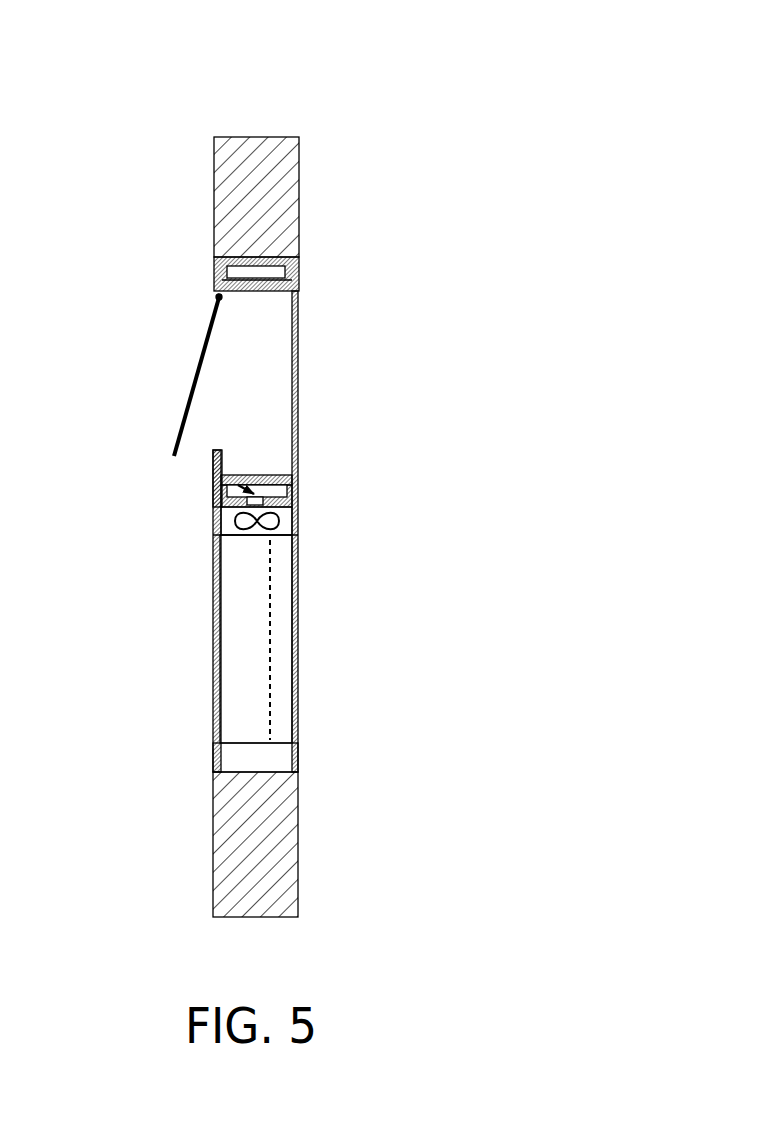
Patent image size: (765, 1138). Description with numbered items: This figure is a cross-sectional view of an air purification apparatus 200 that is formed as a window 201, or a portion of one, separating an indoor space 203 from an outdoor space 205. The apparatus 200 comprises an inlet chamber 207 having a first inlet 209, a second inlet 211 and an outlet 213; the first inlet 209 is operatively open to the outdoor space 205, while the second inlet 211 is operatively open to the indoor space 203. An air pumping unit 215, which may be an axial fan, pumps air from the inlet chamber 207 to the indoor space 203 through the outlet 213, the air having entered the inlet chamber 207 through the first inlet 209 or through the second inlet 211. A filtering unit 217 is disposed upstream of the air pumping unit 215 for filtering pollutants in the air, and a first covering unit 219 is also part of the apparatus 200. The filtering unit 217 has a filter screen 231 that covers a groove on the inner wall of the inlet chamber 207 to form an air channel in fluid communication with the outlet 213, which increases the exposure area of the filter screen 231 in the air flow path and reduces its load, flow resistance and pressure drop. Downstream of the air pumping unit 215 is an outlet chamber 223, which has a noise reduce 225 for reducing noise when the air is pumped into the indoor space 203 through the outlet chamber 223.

The air purification apparatus 200 is at (412, 80).
The window 201 is at (268, 185).
The indoor space 203 is at (498, 179).
The outdoor space 205 is at (93, 179).
The inlet chamber 207 is at (242, 428).
The first inlet 209 is at (222, 345).
The second inlet 211 is at (303, 333).
The outlet 213 is at (258, 468).
The air pumping unit 215 is at (293, 522).
The filtering unit 217 is at (223, 478).
The first covering unit 219 is at (193, 370).
The outlet chamber 223 is at (278, 596).
The noise reduce 225 is at (267, 670).
The filter screen 231 is at (270, 475).